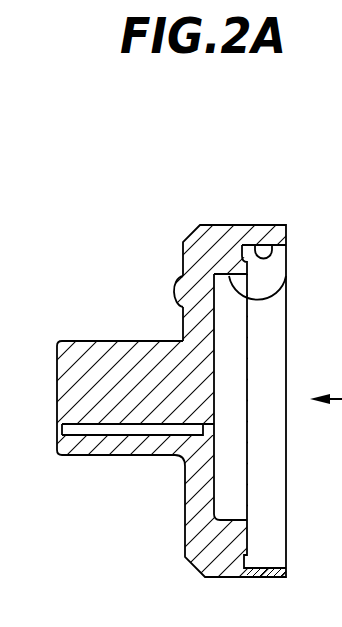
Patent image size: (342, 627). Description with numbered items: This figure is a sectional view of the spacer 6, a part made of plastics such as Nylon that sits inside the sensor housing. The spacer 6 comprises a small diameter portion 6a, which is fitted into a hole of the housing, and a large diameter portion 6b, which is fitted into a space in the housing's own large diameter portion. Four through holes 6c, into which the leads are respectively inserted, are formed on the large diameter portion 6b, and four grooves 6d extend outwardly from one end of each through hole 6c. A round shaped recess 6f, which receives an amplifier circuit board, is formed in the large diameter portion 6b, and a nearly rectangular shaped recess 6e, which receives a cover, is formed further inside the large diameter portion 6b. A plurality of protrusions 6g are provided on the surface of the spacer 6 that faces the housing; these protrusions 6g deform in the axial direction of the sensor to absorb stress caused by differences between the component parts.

The spacer 6 is at (186, 181).
The small diameter portion 6a is at (108, 340).
The large diameter portion 6b is at (230, 224).
The through hole 6c is at (102, 432).
The groove 6d is at (207, 510).
The nearly rectangular shaped recess 6e is at (292, 284).
The round shaped recess 6f is at (273, 224).
The protrusion 6g is at (182, 279).